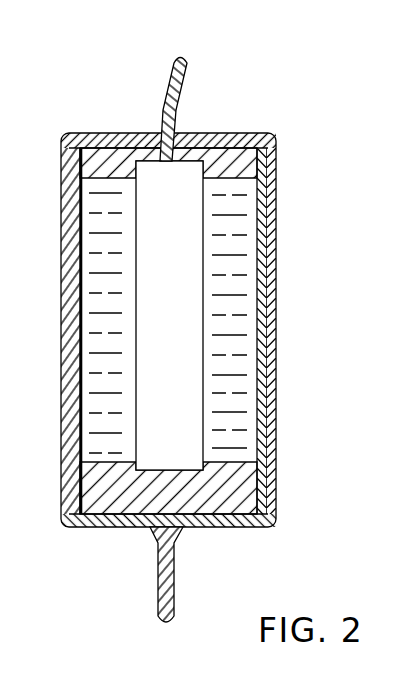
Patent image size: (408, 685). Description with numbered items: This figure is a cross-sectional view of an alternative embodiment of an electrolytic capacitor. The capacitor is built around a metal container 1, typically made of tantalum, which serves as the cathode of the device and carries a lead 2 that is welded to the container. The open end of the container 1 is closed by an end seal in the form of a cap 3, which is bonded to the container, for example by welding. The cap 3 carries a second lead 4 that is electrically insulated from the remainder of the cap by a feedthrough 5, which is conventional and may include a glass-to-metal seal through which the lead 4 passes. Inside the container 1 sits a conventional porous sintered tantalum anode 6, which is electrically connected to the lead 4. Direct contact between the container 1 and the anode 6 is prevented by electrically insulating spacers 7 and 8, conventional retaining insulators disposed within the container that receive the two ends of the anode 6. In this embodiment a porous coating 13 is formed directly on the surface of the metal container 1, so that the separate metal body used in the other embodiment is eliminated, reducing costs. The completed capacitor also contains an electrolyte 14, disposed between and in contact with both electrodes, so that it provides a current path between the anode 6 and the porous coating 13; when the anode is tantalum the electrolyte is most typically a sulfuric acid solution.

The metal container 1 is at (264, 378).
The lead 2 is at (176, 592).
The cap 3 is at (250, 135).
The second lead 4 is at (168, 86).
The feedthrough 5 is at (176, 133).
The porous sintered tantalum anode 6 is at (185, 236).
The electrically insulating spacer 7 is at (205, 497).
The electrically insulating spacer 8 is at (108, 145).
The porous coating 13 is at (258, 333).
The electrolyte 14 is at (245, 425).